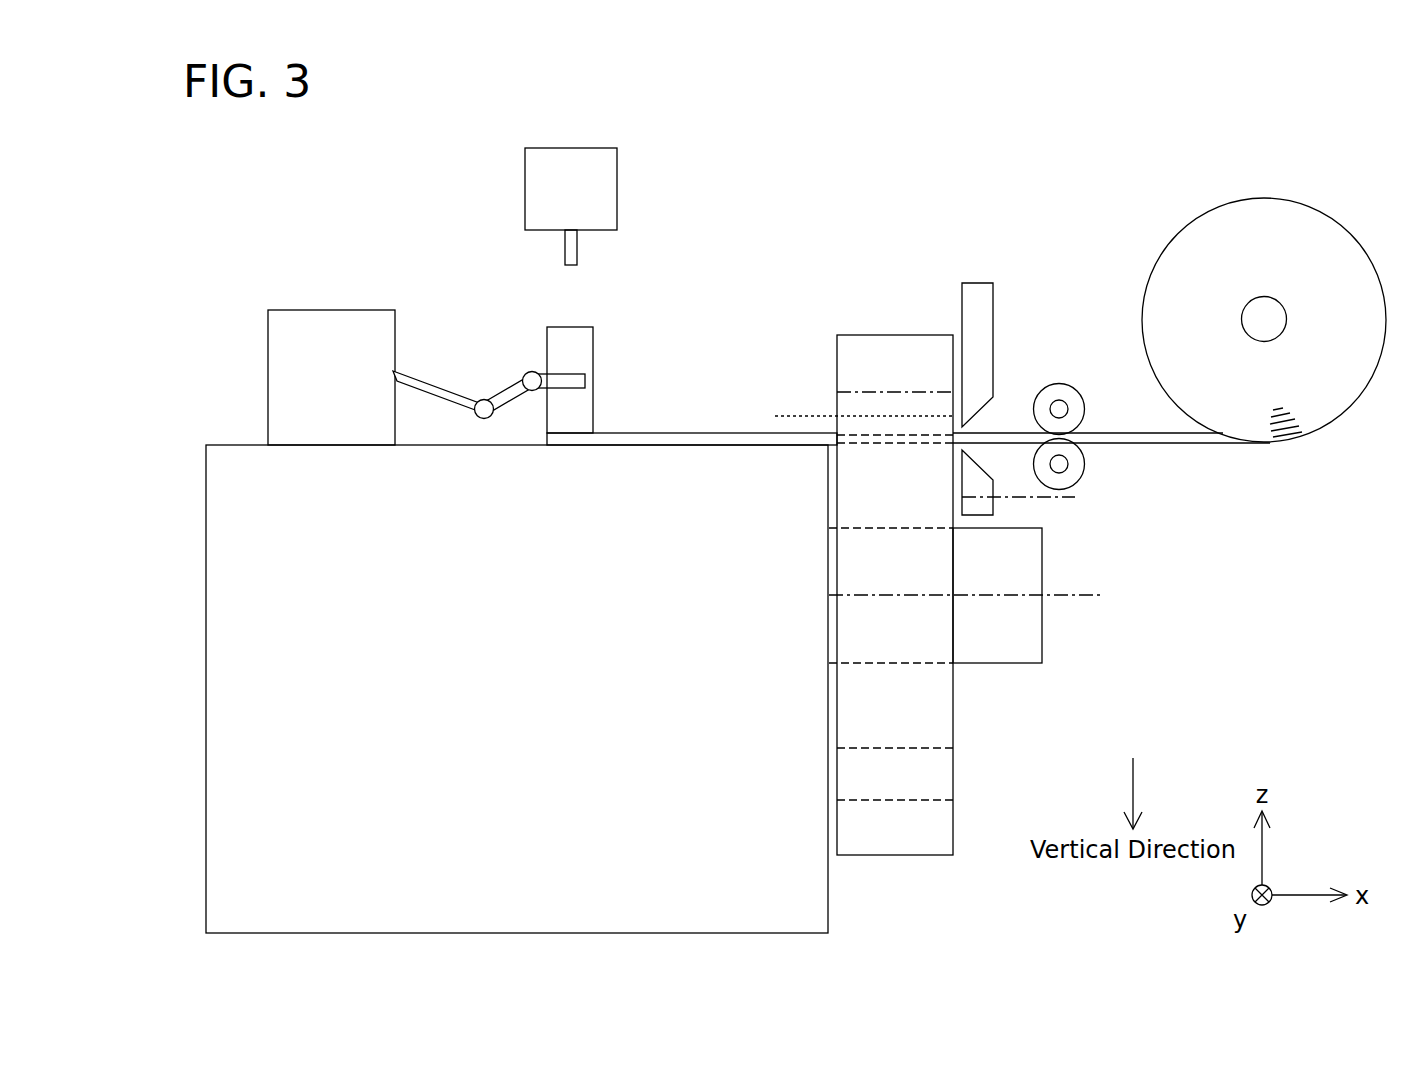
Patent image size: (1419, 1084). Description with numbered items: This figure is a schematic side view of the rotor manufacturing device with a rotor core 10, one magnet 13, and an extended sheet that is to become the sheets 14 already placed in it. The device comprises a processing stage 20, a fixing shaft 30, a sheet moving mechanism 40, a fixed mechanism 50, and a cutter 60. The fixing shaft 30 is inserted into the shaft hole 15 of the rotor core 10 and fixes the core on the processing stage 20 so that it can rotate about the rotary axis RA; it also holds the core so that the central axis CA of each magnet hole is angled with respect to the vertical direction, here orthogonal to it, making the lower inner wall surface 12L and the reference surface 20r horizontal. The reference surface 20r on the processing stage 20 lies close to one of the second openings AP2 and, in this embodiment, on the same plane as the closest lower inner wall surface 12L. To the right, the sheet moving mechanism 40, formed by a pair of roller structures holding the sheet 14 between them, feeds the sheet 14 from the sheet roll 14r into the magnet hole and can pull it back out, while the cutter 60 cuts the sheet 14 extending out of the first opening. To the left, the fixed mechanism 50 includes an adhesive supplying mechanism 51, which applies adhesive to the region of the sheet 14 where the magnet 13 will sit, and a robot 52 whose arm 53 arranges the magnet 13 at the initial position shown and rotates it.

The rotor core 10 is at (885, 350).
The magnet 13 is at (585, 335).
The sheet 14 is at (1108, 433).
The sheet roll 14r is at (1320, 238).
The shaft hole 15 is at (897, 663).
The processing stage 20 is at (220, 455).
The reference surface 20r is at (730, 447).
The fixing shaft 30 is at (1043, 650).
The sheet moving mechanism 40 is at (1078, 372).
The fixed mechanism 50 is at (442, 286).
The adhesive supplying mechanism 51 is at (540, 207).
The robot 52 is at (308, 327).
The arm 53 is at (438, 392).
The cutter 60 is at (978, 293).
The lower inner wall surface 12L is at (897, 447).
The second opening AP2 is at (830, 399).
The central axis CA is at (785, 417).
The rotary axis RA is at (1090, 595).